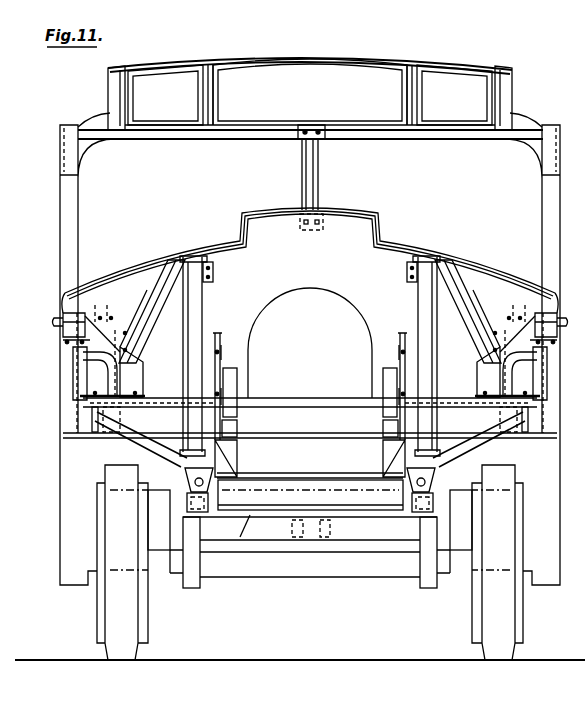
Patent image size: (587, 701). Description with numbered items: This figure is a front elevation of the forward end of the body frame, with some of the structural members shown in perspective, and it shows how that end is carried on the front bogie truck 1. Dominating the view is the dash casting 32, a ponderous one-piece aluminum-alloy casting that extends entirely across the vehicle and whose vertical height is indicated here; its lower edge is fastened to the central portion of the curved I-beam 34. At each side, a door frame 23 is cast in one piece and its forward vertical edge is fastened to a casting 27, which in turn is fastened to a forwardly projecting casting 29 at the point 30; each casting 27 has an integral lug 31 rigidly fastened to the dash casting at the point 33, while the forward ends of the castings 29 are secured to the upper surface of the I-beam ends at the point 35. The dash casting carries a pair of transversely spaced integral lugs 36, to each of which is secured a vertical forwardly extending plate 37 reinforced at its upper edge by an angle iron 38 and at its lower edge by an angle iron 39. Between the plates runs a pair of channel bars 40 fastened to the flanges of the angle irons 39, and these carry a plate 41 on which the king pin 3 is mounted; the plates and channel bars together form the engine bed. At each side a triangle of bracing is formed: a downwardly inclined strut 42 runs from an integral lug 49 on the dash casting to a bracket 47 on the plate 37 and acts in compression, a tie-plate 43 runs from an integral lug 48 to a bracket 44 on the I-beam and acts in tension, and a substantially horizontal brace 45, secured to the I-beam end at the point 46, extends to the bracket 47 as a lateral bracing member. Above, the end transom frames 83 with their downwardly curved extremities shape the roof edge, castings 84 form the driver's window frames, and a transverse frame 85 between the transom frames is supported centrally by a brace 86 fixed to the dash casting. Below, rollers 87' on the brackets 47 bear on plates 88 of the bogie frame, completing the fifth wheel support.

The front bogie truck 1 is at (257, 525).
The king pin 3 is at (300, 523).
The door frame 23 is at (68, 443).
The casting 27 is at (62, 336).
The forwardly projecting casting 29 is at (85, 375).
The fastening 30 is at (67, 388).
The integral lug 31 is at (115, 326).
The dash casting 32 is at (258, 252).
The fastening 33 is at (310, 303).
The curved I-beam 34 is at (310, 410).
The fastening 35 is at (123, 393).
The integral lug 36 is at (217, 337).
The vertical forwardly extending plate 37 is at (222, 382).
The angle iron 38 is at (237, 382).
The angle iron 39 is at (226, 470).
The channel bar 40 is at (337, 473).
The plate 41 is at (302, 473).
The strut 42 is at (207, 292).
The tie-plate 43 is at (503, 256).
The bracket 44 is at (143, 356).
The horizontal brace 45 is at (112, 460).
The fastening 46 is at (110, 445).
The bracket 47 is at (237, 427).
The integral lug 48 is at (174, 256).
The integral lug 49 is at (213, 273).
The forward transom frame 83 is at (112, 88).
The casting 84 is at (70, 207).
The transversely extending frame 85 is at (292, 58).
The brace 86 is at (308, 166).
The roller 87' is at (310, 528).
The plate 88 is at (310, 533).